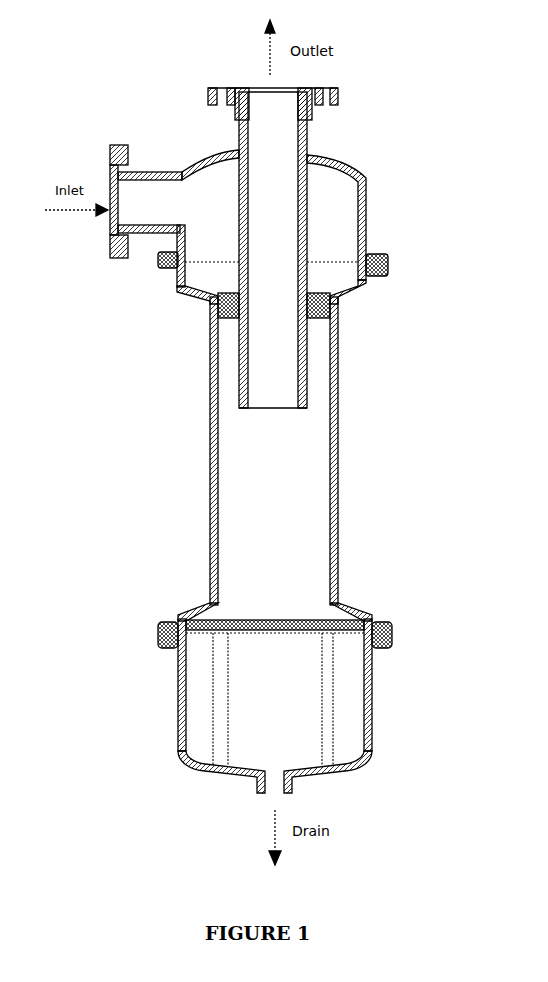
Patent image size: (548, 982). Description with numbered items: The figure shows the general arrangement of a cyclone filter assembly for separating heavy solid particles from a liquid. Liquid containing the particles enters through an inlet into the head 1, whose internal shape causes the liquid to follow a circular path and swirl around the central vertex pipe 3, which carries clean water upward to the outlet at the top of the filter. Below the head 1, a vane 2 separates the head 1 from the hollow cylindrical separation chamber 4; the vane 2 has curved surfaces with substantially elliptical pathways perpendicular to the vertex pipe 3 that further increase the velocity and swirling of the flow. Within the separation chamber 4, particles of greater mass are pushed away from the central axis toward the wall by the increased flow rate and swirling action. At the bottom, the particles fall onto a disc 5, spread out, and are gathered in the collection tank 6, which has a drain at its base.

The head 1 is at (342, 219).
The vane 2 is at (345, 307).
The vertex pipe 3 is at (280, 360).
The hollow cylindrical separation chamber 4 is at (315, 493).
The disc 5 is at (300, 623).
The collection tank 6 is at (342, 685).